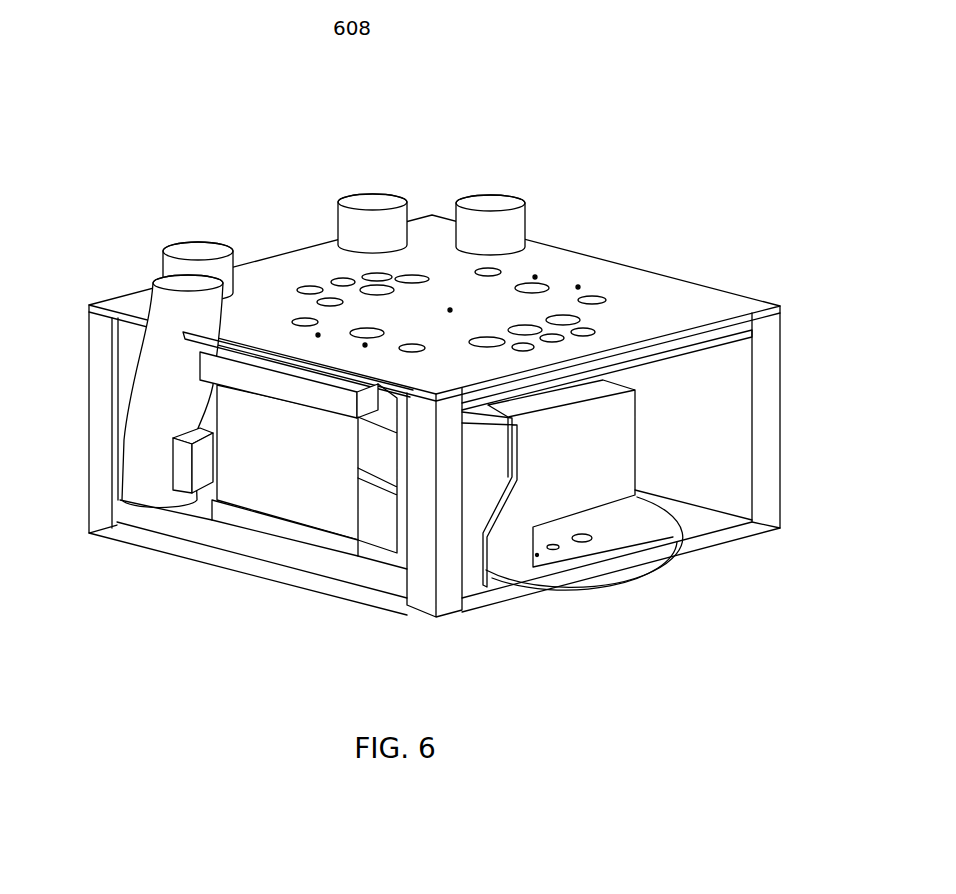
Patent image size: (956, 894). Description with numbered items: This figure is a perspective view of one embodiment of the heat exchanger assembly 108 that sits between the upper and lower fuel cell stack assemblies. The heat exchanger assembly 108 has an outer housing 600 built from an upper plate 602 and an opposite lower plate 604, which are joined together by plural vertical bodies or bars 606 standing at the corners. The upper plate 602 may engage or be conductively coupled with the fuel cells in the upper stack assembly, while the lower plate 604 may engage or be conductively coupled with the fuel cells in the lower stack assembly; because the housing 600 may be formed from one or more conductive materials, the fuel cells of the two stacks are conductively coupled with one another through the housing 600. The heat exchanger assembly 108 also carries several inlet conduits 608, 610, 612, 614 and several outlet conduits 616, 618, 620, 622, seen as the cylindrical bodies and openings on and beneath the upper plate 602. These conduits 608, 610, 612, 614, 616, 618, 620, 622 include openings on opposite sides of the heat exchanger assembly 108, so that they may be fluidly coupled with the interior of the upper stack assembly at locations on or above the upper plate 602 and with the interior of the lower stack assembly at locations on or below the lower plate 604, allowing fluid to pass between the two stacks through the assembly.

The heat exchanger assembly 108 is at (82, 660).
The outer housing 600 is at (82, 240).
The upper plate 602 is at (692, 307).
The lower plate 604 is at (677, 507).
The vertical bodies or bars 606 is at (773, 408).
The inlet conduit 608 is at (190, 271).
The inlet conduit 610 is at (490, 190).
The inlet conduit 612 is at (552, 320).
The inlet conduit 614 is at (545, 280).
The outlet conduit 616 is at (185, 238).
The outlet conduit 618 is at (370, 190).
The outlet conduit 620 is at (372, 273).
The outlet conduit 622 is at (362, 332).